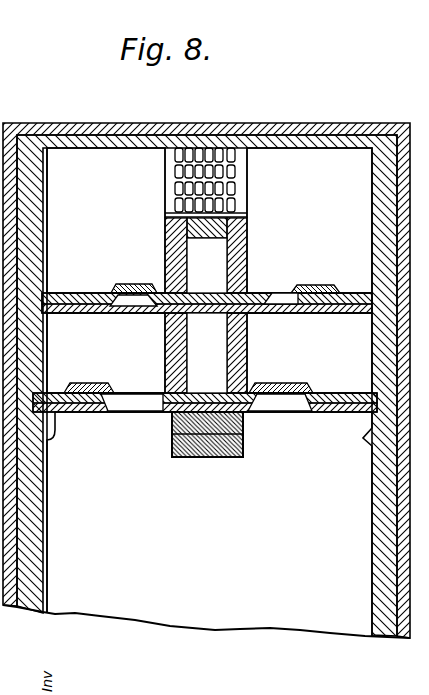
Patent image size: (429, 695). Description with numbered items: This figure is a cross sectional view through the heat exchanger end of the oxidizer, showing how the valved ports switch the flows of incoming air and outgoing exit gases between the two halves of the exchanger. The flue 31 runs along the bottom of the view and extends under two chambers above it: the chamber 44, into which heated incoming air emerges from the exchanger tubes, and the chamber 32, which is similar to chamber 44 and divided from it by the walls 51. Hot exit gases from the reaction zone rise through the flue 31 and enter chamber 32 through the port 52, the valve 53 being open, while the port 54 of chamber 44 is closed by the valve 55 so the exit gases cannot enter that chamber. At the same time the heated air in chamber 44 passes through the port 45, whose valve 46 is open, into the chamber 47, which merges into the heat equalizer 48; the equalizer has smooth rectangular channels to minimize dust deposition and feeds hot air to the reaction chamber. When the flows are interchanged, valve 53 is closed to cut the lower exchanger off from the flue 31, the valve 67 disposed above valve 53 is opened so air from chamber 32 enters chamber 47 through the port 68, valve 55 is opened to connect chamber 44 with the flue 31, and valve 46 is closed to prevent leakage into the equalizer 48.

The flue 31 is at (215, 515).
The chamber 32 is at (155, 349).
The chamber 44 is at (342, 347).
The port 45 is at (278, 299).
The valve 46 is at (332, 281).
The chamber 47 is at (118, 229).
The heat equalizer 48 is at (188, 178).
The walls 51 is at (226, 282).
The port 52 is at (133, 397).
The valve 53 is at (100, 377).
The port 54 is at (282, 404).
The valve 55 is at (283, 384).
The valve 67 is at (124, 288).
The port 68 is at (124, 303).